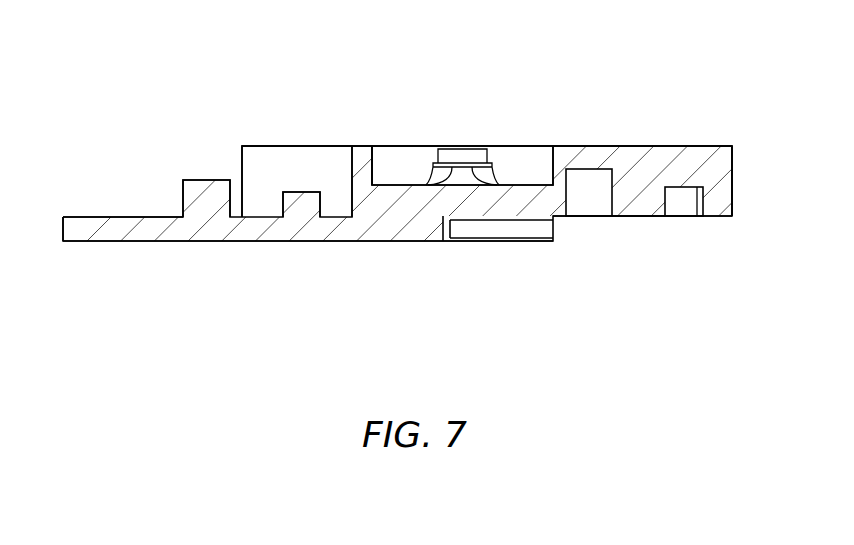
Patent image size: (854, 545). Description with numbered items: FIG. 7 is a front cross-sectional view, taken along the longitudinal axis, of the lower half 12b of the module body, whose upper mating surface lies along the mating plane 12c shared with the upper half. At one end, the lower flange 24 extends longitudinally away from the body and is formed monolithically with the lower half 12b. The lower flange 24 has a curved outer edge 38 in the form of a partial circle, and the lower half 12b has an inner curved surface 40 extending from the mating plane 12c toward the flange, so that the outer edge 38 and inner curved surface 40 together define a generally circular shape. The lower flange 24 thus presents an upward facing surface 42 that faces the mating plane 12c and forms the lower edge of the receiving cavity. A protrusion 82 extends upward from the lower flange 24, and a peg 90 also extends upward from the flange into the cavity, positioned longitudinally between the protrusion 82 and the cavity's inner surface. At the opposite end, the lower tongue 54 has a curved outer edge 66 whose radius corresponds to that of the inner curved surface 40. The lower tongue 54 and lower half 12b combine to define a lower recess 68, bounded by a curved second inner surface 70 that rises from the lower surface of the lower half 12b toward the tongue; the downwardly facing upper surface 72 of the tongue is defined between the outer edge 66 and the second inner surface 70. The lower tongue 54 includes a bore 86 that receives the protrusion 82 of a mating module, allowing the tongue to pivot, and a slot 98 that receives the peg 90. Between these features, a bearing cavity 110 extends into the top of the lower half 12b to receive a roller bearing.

The lower half 12b is at (478, 50).
The mating plane 12c is at (568, 145).
The lower flange 24 is at (100, 242).
The curved outer edge 38 is at (62, 226).
The inner curved surface 40 is at (352, 168).
The upward facing surface 42 is at (123, 217).
The lower tongue 54 is at (670, 145).
The curved outer edge 66 is at (734, 163).
The lower recess 68 is at (588, 222).
The second inner surface 70 is at (447, 228).
The upper surface 72 is at (641, 218).
The protrusion 82 is at (197, 180).
The bore 86 is at (590, 183).
The peg 90 is at (297, 192).
The slot 98 is at (683, 205).
The bearing cavity 110 is at (514, 160).